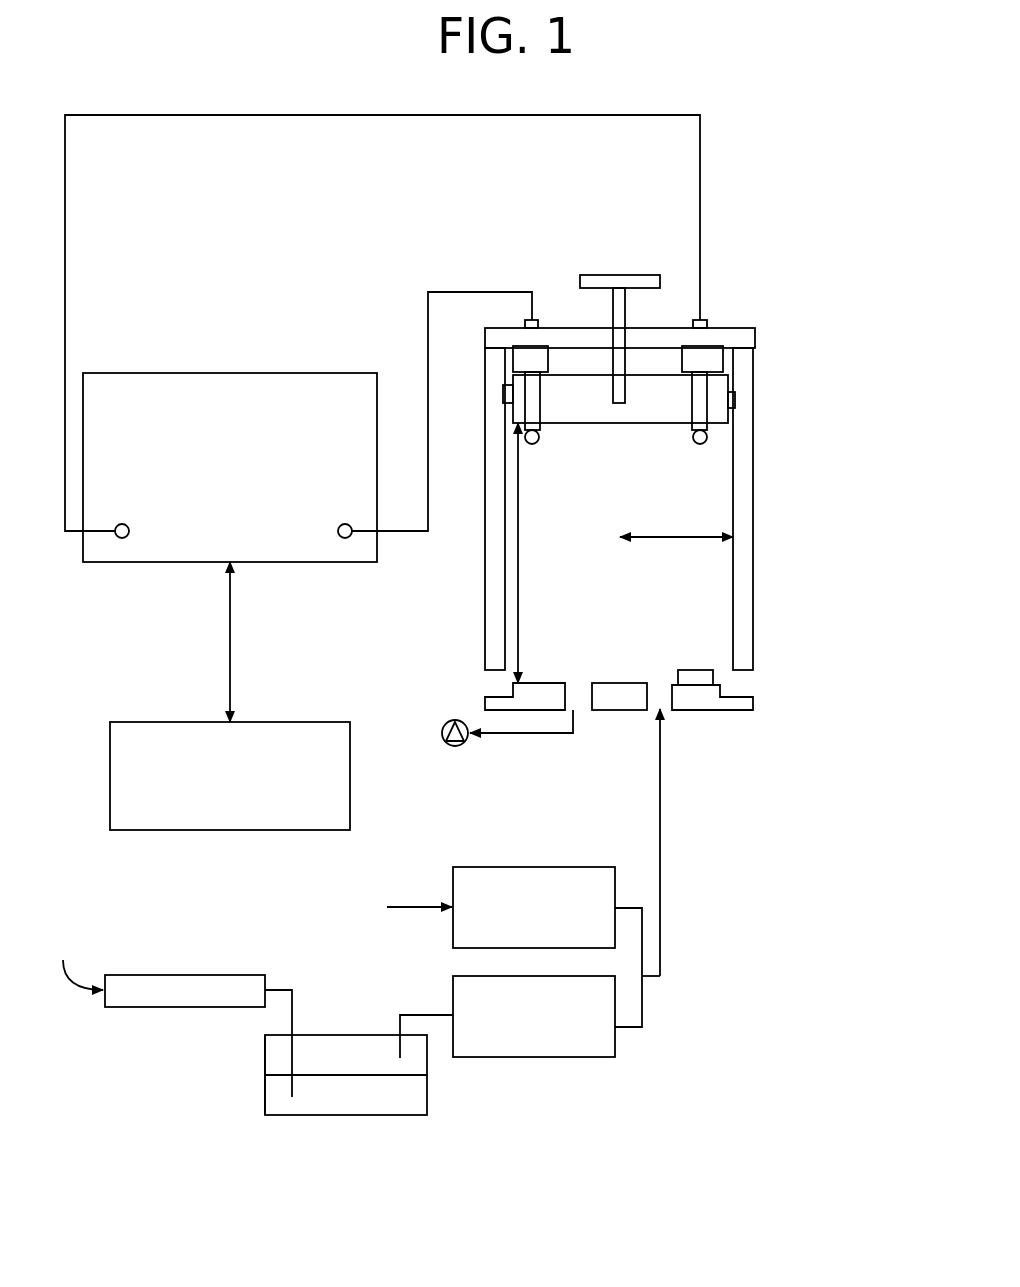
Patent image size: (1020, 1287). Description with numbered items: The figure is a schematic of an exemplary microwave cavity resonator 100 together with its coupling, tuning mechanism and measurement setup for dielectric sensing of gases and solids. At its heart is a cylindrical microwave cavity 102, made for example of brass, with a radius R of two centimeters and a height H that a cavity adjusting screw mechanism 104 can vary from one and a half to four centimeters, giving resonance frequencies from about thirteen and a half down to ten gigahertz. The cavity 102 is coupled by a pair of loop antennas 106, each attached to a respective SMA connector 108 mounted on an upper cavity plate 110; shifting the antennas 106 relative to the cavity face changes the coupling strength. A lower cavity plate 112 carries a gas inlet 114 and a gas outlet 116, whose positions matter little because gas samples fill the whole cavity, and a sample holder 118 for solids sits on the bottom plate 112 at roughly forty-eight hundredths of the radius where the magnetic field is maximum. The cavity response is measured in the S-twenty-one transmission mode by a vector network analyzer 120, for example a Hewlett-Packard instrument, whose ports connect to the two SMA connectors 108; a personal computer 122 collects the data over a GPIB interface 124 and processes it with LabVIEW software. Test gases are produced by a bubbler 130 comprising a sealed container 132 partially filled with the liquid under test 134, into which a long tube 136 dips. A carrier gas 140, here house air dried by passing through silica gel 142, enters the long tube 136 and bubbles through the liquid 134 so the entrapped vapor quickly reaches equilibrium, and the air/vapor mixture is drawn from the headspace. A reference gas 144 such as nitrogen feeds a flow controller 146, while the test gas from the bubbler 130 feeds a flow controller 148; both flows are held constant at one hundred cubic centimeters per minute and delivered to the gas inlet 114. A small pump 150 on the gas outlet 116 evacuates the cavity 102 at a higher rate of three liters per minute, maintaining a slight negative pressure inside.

The microwave cavity resonator 100 is at (307, 267).
The cylindrical microwave cavity 102 is at (733, 562).
The cavity adjusting screw mechanism 104 is at (583, 262).
The loop antennas 106 is at (691, 441).
The SMA connector 108 is at (552, 357).
The upper cavity plate 110 is at (727, 424).
The lower cavity plate 112 is at (493, 695).
The gas inlet 114 is at (668, 703).
The gas outlet 116 is at (583, 697).
The sample holder 118 is at (719, 677).
The vector network analyzer 120 is at (230, 467).
The personal computer 122 is at (230, 776).
The GPIB interface 124 is at (282, 642).
The bubbler 130 is at (362, 988).
The sealed container 132 is at (265, 1088).
The liquid under test 134 is at (455, 1092).
The long tube 136 is at (292, 1050).
The carrier gas 140 is at (111, 952).
The silica gel 142 is at (185, 991).
The reference gas 144 is at (361, 905).
The flow controller 146 is at (534, 907).
The flow controller 148 is at (534, 1016).
The pump 150 is at (451, 758).